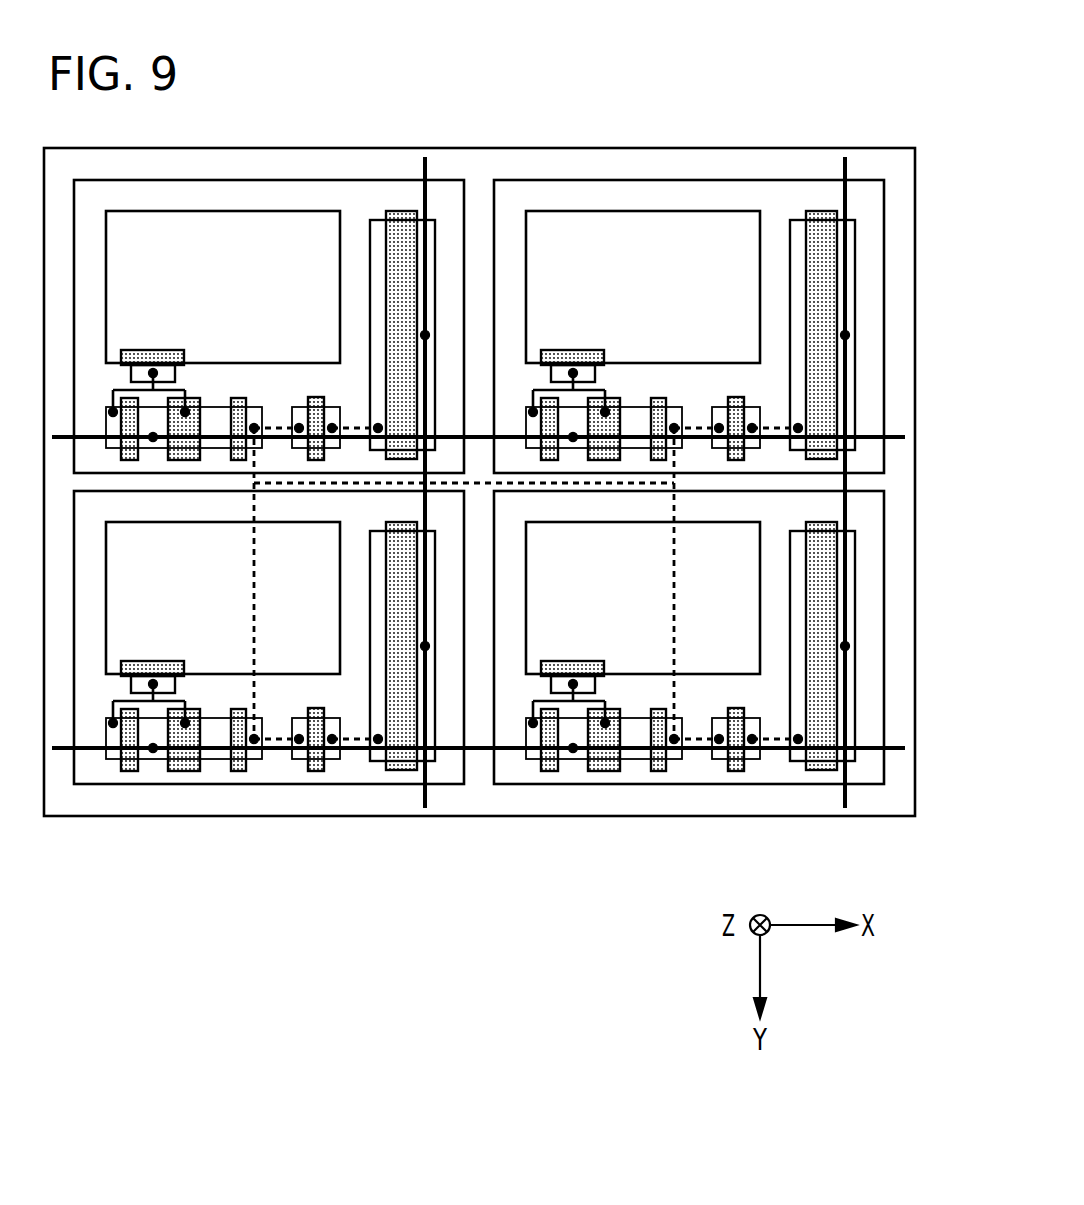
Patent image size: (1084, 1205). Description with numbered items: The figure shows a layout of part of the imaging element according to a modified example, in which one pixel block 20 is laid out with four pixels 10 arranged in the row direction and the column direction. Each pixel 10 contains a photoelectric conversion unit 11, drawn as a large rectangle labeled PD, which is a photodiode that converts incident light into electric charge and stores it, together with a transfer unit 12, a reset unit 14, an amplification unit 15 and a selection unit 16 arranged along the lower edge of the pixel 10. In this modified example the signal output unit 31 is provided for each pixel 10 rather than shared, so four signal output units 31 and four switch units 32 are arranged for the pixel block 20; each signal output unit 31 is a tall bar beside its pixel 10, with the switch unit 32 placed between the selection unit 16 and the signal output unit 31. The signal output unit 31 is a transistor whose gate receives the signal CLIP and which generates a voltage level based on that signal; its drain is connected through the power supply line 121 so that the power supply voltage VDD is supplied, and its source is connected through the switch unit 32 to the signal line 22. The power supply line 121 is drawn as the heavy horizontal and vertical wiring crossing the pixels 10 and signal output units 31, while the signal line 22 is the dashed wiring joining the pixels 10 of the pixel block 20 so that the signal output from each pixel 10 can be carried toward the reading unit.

The pixel block 20 is at (822, 148).
The pixel 10 is at (261, 180).
The photoelectric conversion unit 11 is at (184, 209).
The transfer unit 12 is at (120, 362).
The reset unit 14 is at (121, 458).
The amplification unit 15 is at (198, 396).
The selection unit 16 is at (241, 396).
The signal line 22 is at (480, 485).
The signal output unit 31 is at (395, 210).
The switch unit 32 is at (324, 396).
The power supply line 121 is at (428, 170).